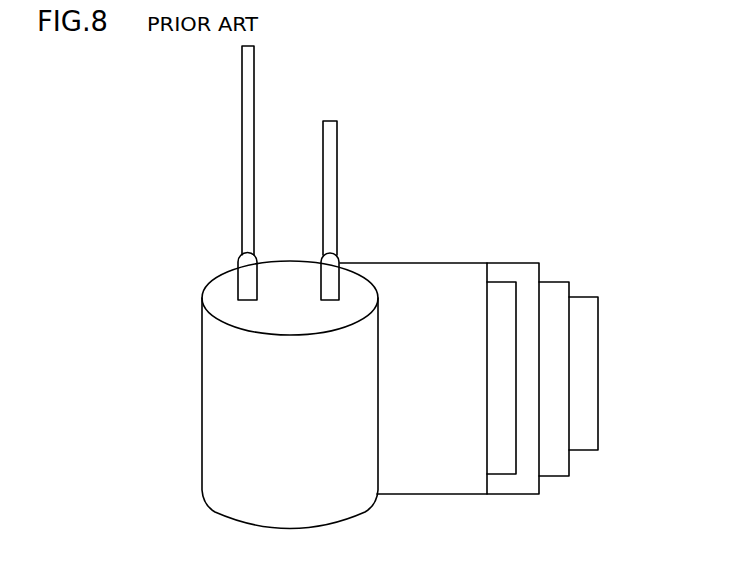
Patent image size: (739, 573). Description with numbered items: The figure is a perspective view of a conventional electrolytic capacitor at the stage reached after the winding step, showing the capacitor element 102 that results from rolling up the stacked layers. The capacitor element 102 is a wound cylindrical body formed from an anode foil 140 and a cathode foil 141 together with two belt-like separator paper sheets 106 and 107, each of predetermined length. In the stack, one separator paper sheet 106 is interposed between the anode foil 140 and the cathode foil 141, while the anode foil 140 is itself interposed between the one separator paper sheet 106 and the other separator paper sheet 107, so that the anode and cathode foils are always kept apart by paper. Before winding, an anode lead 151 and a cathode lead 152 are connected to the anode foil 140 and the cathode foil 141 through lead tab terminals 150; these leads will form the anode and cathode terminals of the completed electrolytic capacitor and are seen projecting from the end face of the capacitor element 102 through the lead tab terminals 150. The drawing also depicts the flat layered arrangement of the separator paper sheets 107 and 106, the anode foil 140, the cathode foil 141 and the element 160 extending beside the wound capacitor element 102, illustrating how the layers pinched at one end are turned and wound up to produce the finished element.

The capacitor element 102 is at (242, 410).
The anode lead 151 is at (248, 184).
The cathode lead 152 is at (331, 183).
The lead tab terminal 150 is at (246, 281).
The separator paper sheet 107 is at (431, 480).
The separator paper sheet 106 is at (514, 483).
The anode foil 140 is at (500, 296).
The cathode foil 141 is at (553, 297).
The connector 160 is at (580, 390).